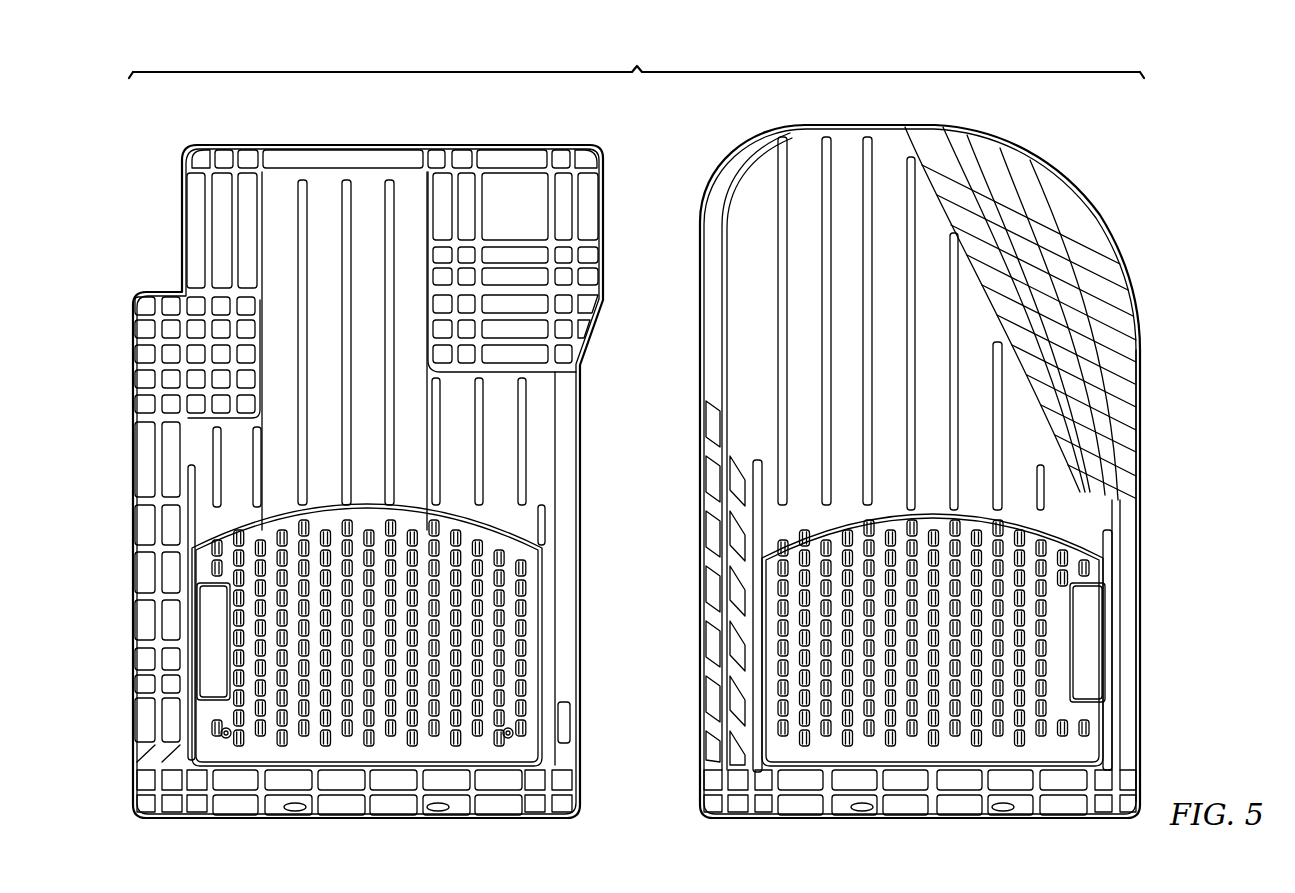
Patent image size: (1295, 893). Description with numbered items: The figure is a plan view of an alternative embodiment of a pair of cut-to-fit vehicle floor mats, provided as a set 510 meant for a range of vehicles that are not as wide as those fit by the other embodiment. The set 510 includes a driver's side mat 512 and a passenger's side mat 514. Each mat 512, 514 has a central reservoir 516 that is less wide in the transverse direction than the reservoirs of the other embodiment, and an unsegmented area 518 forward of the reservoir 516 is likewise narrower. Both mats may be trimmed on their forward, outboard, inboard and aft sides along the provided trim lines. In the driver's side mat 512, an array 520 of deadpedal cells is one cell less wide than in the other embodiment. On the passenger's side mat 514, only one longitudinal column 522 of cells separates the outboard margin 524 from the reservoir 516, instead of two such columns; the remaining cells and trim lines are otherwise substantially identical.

The set of mats 510 is at (636, 60).
The driver's side mat 512 is at (443, 148).
The passenger's side mat 514 is at (887, 123).
The central reservoir 516 is at (492, 514).
The unsegmented area 518 is at (327, 187).
The array of deadpedal cells 520 is at (202, 423).
The longitudinal column of cells 522 is at (1125, 431).
The outboard margin 524 is at (1141, 567).